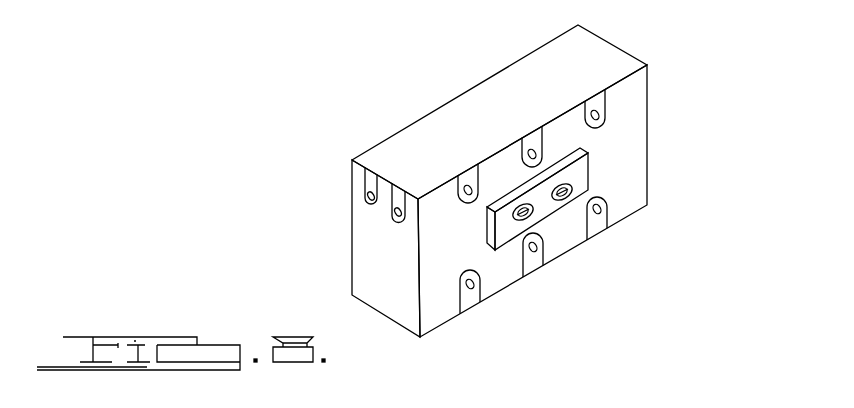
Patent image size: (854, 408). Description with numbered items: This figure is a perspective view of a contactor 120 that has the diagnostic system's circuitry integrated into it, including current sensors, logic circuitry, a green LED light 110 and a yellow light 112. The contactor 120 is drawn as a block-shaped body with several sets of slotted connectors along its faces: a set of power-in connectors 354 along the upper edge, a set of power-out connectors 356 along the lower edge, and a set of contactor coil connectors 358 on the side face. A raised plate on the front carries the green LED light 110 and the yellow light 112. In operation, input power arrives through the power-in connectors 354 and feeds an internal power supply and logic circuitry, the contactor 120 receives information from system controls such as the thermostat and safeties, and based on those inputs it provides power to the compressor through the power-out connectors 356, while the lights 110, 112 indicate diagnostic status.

The contactor 120 is at (695, 64).
The power-in connectors 354 is at (466, 186).
The power-out connectors 356 is at (471, 288).
The contactor coil connectors 358 is at (368, 196).
The green LED light 110 is at (568, 189).
The yellow light 112 is at (518, 215).